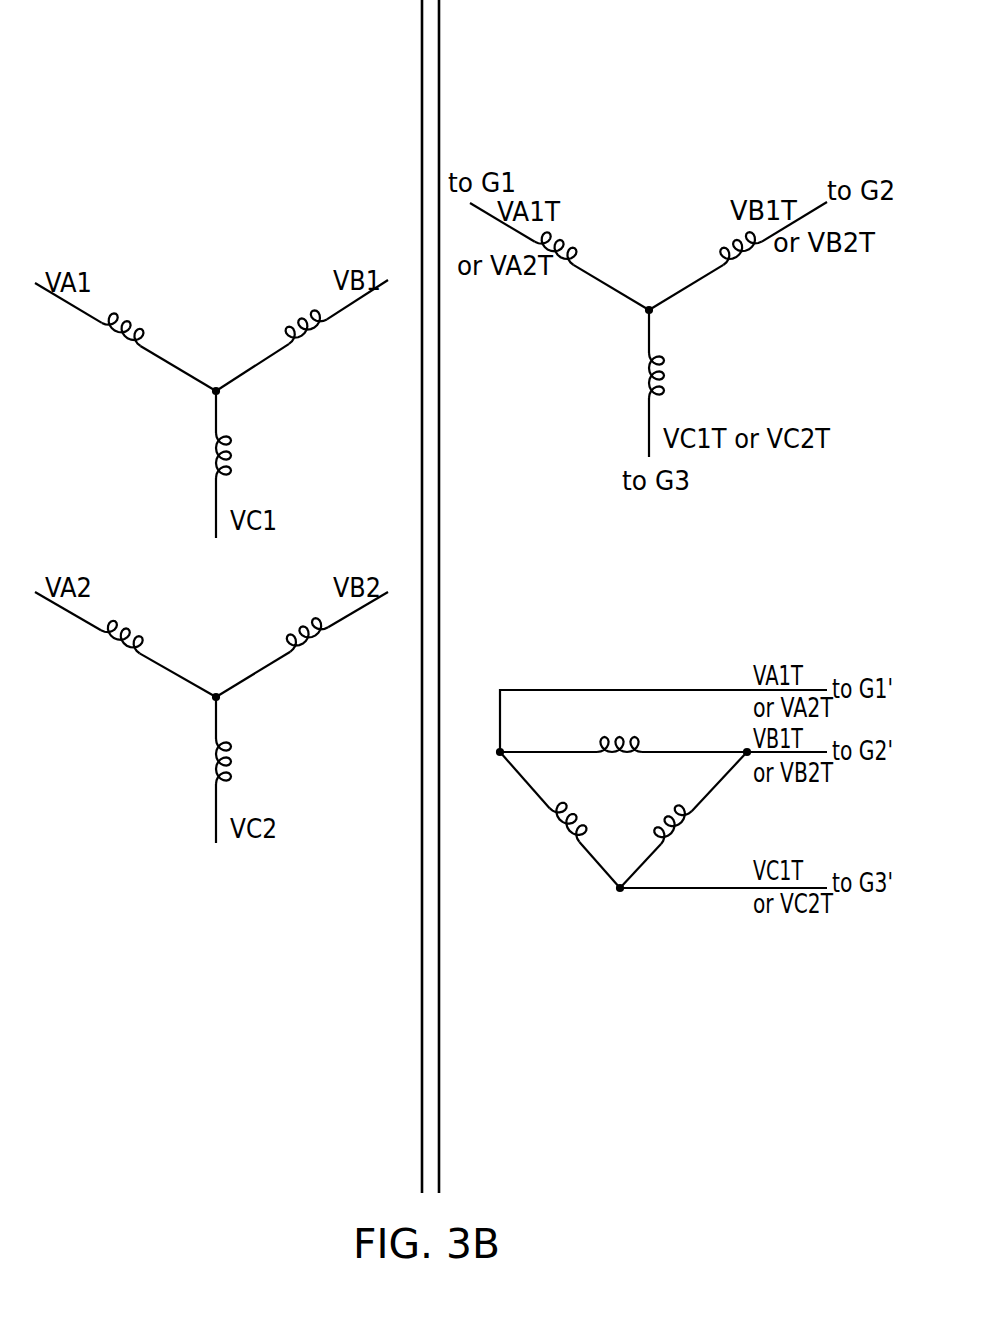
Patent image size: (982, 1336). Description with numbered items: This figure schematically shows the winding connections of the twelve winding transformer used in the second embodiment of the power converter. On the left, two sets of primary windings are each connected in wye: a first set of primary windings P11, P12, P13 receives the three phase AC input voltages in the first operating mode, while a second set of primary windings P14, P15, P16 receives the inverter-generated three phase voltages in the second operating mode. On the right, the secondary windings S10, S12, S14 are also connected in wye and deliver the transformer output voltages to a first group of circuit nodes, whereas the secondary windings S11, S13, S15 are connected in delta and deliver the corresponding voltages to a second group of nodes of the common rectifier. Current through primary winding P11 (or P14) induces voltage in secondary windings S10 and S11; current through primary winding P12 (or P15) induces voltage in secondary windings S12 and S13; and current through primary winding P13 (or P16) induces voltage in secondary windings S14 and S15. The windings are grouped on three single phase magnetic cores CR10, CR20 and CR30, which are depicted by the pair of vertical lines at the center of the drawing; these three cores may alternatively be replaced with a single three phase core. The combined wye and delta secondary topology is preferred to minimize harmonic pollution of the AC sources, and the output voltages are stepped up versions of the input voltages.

The primary winding P11 is at (137, 318).
The primary winding P12 is at (318, 337).
The primary winding P13 is at (252, 455).
The primary winding P14 is at (137, 625).
The primary winding P15 is at (318, 645).
The primary winding P16 is at (252, 761).
The secondary winding S10 is at (574, 237).
The secondary winding S11 is at (615, 738).
The secondary winding S12 is at (752, 260).
The secondary winding S13 is at (681, 822).
The secondary winding S14 is at (684, 375).
The secondary winding S15 is at (561, 826).
The single phase magnetic core CR10 is at (579, 596).
The single phase magnetic core CR20 is at (579, 596).
The single phase magnetic core CR30 is at (440, 10).